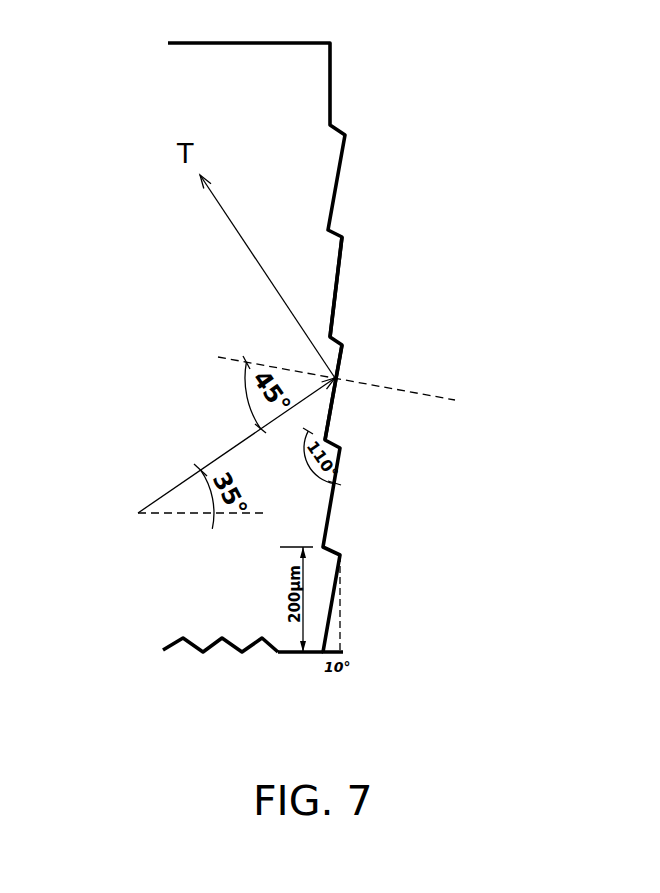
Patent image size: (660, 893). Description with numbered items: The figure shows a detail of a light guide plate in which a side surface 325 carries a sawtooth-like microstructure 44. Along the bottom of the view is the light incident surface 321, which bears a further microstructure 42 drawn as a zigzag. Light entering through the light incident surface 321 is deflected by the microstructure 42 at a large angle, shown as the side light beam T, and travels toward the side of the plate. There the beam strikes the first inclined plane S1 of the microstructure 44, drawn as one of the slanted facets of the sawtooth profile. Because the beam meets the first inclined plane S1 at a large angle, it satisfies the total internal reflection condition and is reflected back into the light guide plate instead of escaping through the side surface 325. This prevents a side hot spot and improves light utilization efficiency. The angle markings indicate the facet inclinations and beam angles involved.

The side surface 325 is at (330, 90).
The microstructure 44 is at (335, 307).
The first inclined plane S1 is at (332, 407).
The microstructure 42 is at (230, 650).
The light incident surface 321 is at (297, 652).